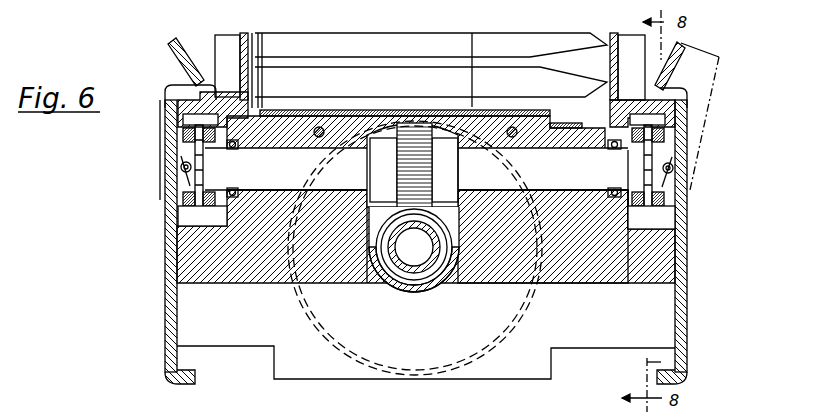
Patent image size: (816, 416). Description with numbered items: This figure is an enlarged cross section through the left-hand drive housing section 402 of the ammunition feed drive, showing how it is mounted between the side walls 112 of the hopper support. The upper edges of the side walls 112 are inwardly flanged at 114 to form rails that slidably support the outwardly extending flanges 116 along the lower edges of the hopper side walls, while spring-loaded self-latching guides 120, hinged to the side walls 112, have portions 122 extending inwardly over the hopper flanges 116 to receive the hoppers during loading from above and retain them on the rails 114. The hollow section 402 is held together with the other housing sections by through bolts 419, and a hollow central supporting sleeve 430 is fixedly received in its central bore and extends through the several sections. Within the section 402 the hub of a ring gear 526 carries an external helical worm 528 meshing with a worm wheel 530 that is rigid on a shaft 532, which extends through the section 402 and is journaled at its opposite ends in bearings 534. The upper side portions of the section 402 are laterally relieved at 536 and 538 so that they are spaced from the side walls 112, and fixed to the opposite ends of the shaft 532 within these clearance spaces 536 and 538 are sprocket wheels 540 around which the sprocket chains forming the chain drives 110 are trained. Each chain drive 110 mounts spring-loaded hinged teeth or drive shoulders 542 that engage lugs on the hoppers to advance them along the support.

The chain drives 110 is at (173, 141).
The side walls 112 is at (164, 349).
The inwardly flanged upper edges 114 is at (185, 118).
The outwardly extending flanges 116 is at (170, 88).
The self-latching guides 120 is at (159, 103).
The inwardly extending portions 122 is at (172, 50).
The drive housing section 402 is at (195, 265).
The through bolts 419 is at (330, 108).
The central supporting sleeve 430 is at (400, 268).
The ring gear 526 is at (394, 124).
The external helical worm 528 is at (424, 272).
The worm wheel 530 is at (422, 173).
The shaft 532 is at (568, 182).
The bearings 534 is at (232, 208).
The laterally relieved portion 536 is at (227, 218).
The laterally relieved portion 538 is at (631, 221).
The sprocket wheels 540 is at (200, 164).
The drive shoulders 542 is at (188, 128).